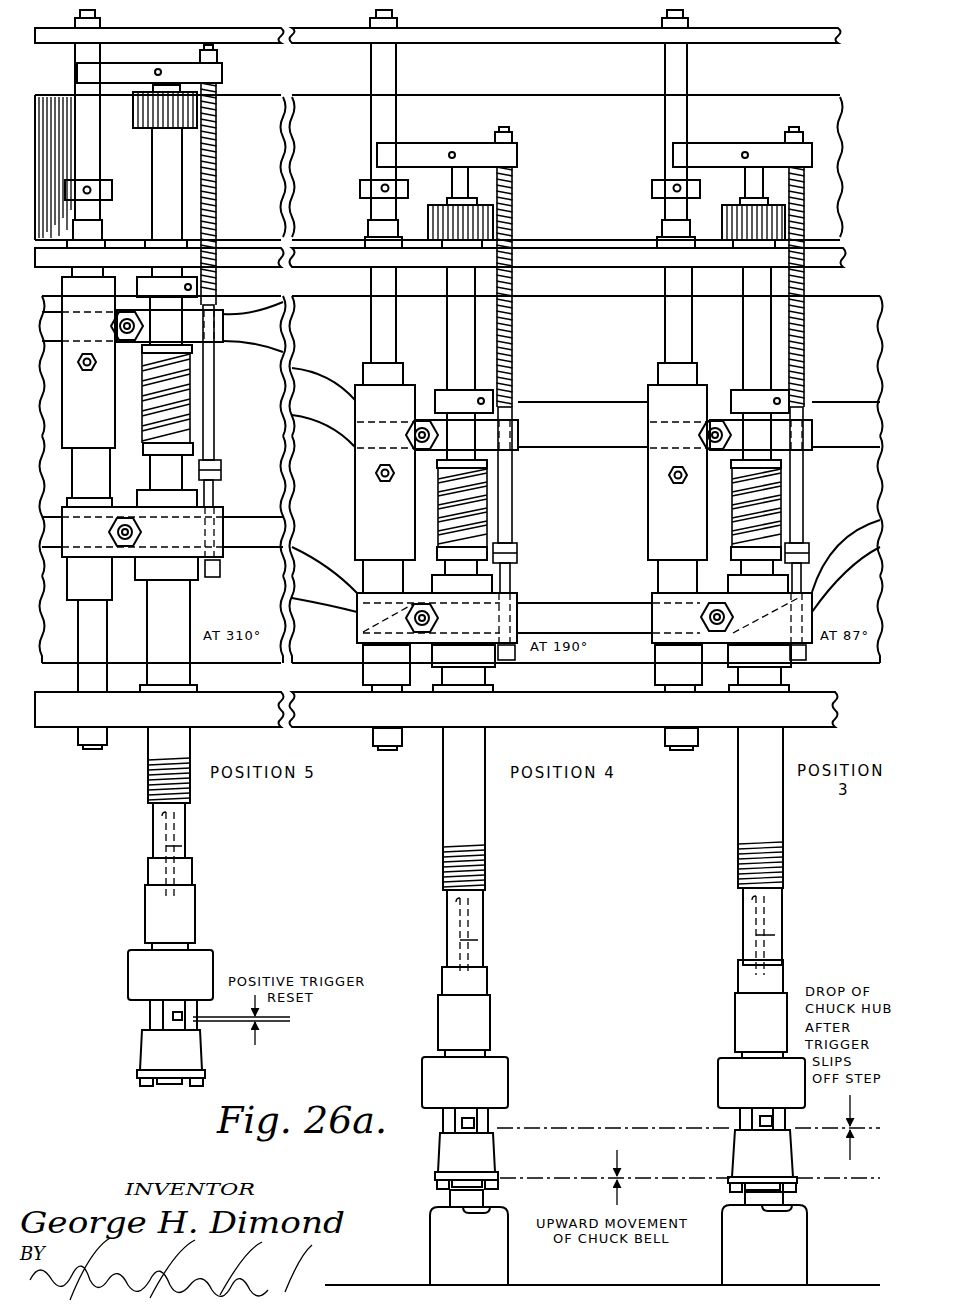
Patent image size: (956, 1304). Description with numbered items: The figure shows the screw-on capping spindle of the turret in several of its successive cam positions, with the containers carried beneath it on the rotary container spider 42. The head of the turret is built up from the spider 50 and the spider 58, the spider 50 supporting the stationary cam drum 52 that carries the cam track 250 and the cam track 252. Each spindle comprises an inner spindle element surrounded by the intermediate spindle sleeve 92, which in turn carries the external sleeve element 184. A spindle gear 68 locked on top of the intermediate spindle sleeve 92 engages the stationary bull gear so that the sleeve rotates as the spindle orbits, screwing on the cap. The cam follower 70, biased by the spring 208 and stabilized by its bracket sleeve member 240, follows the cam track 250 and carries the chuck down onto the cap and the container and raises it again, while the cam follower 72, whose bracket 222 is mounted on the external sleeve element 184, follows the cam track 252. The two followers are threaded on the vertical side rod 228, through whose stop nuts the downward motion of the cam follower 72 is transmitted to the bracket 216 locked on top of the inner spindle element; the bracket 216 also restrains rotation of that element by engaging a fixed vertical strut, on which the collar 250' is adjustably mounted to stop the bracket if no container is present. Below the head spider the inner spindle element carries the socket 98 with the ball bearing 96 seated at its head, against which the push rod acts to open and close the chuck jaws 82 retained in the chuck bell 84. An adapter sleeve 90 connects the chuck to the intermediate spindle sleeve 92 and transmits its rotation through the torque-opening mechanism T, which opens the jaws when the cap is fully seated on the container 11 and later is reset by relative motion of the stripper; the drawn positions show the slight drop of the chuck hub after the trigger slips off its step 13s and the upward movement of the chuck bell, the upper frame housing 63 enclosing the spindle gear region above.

The bracket 216 is at (224, 74).
The upper frame housing 63 is at (290, 121).
The spindle gear 68 is at (135, 118).
The collar 250' is at (382, 174).
The spider 58 is at (298, 250).
The cam drum 52 is at (283, 309).
The cam follower 70 is at (225, 331).
The spring 208 is at (187, 378).
The bracket sleeve member 240 is at (92, 401).
The cam track 250 is at (699, 406).
The vertical side rod 228 is at (805, 485).
The cam track 252 is at (286, 544).
The cam follower 72 is at (224, 552).
The bracket 222 is at (656, 613).
The spider 50 is at (289, 727).
The external sleeve element 184 is at (160, 763).
The ball bearing 96 is at (176, 822).
The intermediate spindle sleeve 92 is at (154, 825).
The socket 98 is at (186, 848).
The adapter sleeve 90 is at (154, 913).
The torque-opening mechanism T is at (128, 969).
The chuck bell 84 is at (152, 1046).
The chuck jaws 82 is at (166, 1083).
The step 13s is at (491, 1209).
The workpiece 11 is at (430, 1246).
The rotary container spider 42 is at (591, 1284).